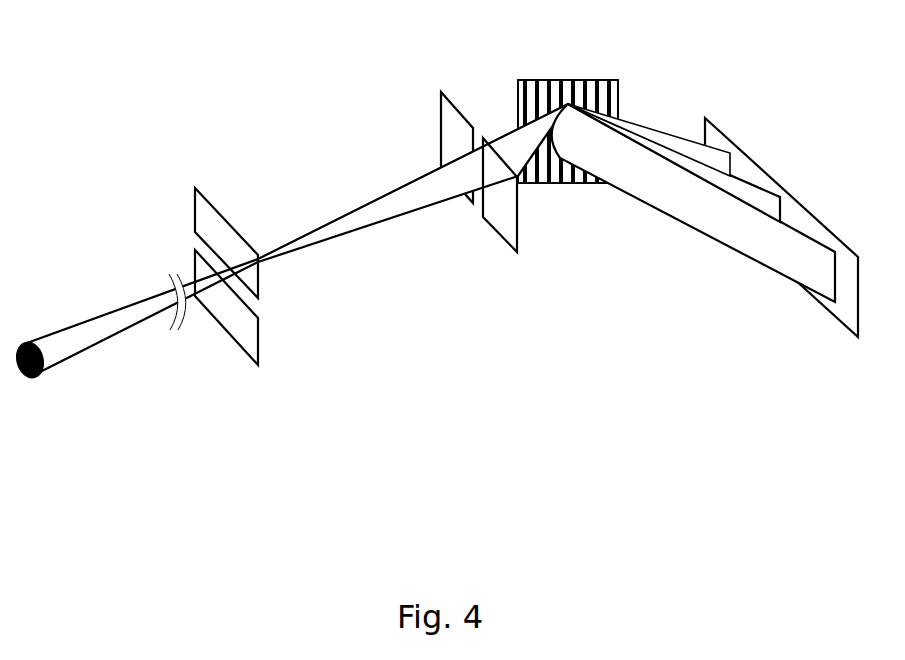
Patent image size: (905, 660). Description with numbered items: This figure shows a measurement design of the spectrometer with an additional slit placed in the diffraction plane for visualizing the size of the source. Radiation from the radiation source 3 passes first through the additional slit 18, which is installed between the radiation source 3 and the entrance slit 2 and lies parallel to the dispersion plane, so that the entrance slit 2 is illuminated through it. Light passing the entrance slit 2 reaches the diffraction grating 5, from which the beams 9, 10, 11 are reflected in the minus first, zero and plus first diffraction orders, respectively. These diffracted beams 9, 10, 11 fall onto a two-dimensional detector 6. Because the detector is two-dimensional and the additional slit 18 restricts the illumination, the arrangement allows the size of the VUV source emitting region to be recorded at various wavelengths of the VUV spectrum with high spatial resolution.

The entrance slit 2 is at (517, 222).
The radiation source 3 is at (17, 378).
The diffraction grating 5 is at (597, 80).
The two-dimensional detector 6 is at (823, 226).
The beam 9 is at (738, 253).
The beam 10 is at (750, 184).
The beam 11 is at (663, 128).
The additional slit 18 is at (258, 350).